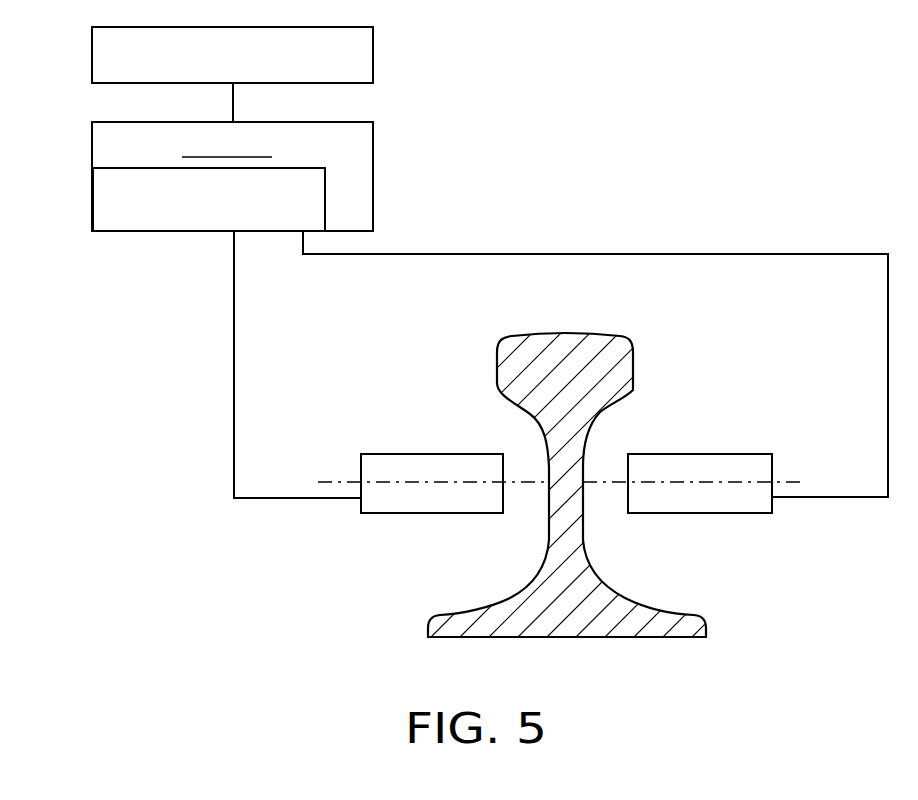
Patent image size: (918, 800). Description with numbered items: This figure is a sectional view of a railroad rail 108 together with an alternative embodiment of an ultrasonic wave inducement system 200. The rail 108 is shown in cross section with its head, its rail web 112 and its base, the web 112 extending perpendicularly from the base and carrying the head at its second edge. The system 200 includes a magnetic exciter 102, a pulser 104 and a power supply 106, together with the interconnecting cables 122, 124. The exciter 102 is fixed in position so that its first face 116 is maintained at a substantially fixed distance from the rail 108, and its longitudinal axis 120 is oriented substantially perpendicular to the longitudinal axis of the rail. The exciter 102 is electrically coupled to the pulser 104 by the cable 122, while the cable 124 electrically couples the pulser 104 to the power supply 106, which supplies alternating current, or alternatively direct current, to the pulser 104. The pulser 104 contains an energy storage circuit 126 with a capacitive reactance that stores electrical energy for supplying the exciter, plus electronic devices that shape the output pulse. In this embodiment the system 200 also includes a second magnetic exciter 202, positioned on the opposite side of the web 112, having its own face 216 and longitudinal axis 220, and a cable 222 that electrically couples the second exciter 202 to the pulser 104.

The power supply 106 is at (373, 63).
The cable 124 is at (233, 112).
The pulser 104 is at (373, 177).
The energy storage circuit 126 is at (132, 232).
The cable 122 is at (234, 407).
The cable 222 is at (542, 254).
The ultrasonic wave inducement system 200 is at (660, 175).
The rail 108 is at (667, 320).
The rail web 112 is at (580, 530).
The magnetic exciter 102 is at (377, 515).
The second magnetic exciter 202 is at (745, 513).
The longitudinal axis 120 is at (345, 480).
The longitudinal axis 220 is at (790, 478).
The first face 116 is at (503, 465).
The face 216 is at (628, 466).